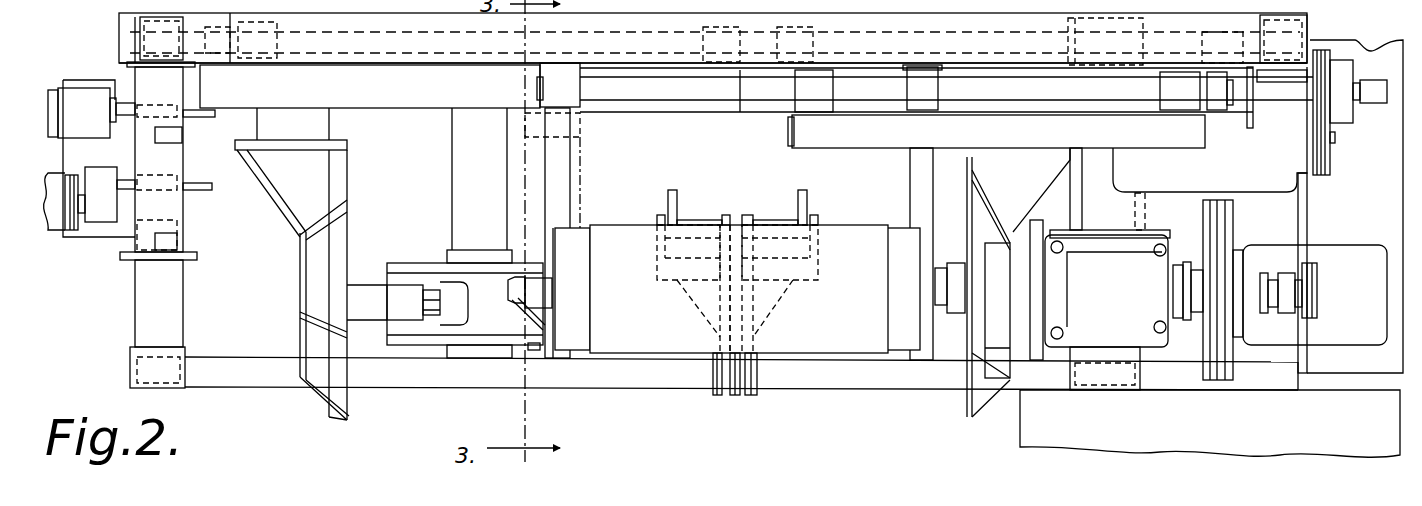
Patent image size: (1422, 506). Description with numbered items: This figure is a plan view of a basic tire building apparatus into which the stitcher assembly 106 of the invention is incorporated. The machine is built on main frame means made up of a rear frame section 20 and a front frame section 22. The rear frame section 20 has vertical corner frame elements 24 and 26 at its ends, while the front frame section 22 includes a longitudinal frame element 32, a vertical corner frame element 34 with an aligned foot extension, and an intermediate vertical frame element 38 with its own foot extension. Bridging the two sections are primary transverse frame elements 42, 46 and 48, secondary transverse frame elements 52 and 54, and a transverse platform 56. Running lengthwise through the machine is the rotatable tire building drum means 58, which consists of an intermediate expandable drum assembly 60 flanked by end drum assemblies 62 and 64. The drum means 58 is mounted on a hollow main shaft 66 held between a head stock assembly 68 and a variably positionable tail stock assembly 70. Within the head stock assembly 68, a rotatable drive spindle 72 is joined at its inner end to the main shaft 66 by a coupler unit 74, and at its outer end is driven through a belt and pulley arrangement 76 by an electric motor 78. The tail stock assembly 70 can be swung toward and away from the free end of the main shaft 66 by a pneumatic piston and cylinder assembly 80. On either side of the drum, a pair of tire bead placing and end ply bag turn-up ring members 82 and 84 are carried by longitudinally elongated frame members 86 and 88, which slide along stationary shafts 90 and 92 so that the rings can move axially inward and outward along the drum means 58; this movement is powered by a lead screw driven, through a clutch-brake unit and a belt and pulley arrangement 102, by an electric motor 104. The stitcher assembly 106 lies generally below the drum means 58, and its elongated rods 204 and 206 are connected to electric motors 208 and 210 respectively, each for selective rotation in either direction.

The rear frame section 20 is at (437, 14).
The front frame section 22 is at (466, 388).
The vertical corner frame element 24 is at (153, 38).
The vertical corner frame element 26 is at (1288, 37).
The longitudinal frame element 32 is at (862, 377).
The vertical corner frame element 34 is at (130, 362).
The intermediate vertical frame element 38 is at (1108, 385).
The primary transverse frame element 42 is at (148, 288).
The primary transverse frame element 46 is at (462, 165).
The primary transverse frame element 48 is at (1128, 210).
The secondary transverse frame element 52 is at (560, 150).
The secondary transverse frame element 54 is at (912, 165).
The transverse platform 56 is at (1295, 218).
The tire building drum means 58 is at (837, 225).
The intermediate expandable drum assembly 60 is at (620, 208).
The end drum assembly 62 is at (570, 240).
The end drum assembly 64 is at (898, 240).
The hollow main shaft 66 is at (555, 268).
The head stock assembly 68 is at (1093, 262).
The tail stock assembly 70 is at (515, 290).
The drive spindle 72 is at (1178, 265).
The coupler unit 74 is at (957, 305).
The belt and pulley arrangement 76 is at (1237, 215).
The electric motor 78 is at (1368, 297).
The pneumatic piston and cylinder assembly 80 is at (370, 288).
The tire bead placing and end ply bag turn-up ring member 82 is at (313, 283).
The tire bead placing and end ply bag turn-up ring member 84 is at (970, 395).
The longitudinally elongated frame member 86 is at (378, 100).
The longitudinally elongated frame member 88 is at (1153, 142).
The stationary shaft 90 is at (640, 30).
The stationary shaft 92 is at (780, 92).
The belt and pulley arrangement 102 is at (1333, 163).
The electric motor 104 is at (1287, 164).
The stitcher assembly 106 is at (737, 210).
The elongated rod 204 is at (210, 117).
The elongated rod 206 is at (205, 188).
The electric motor 208 is at (50, 117).
The electric motor 210 is at (42, 223).